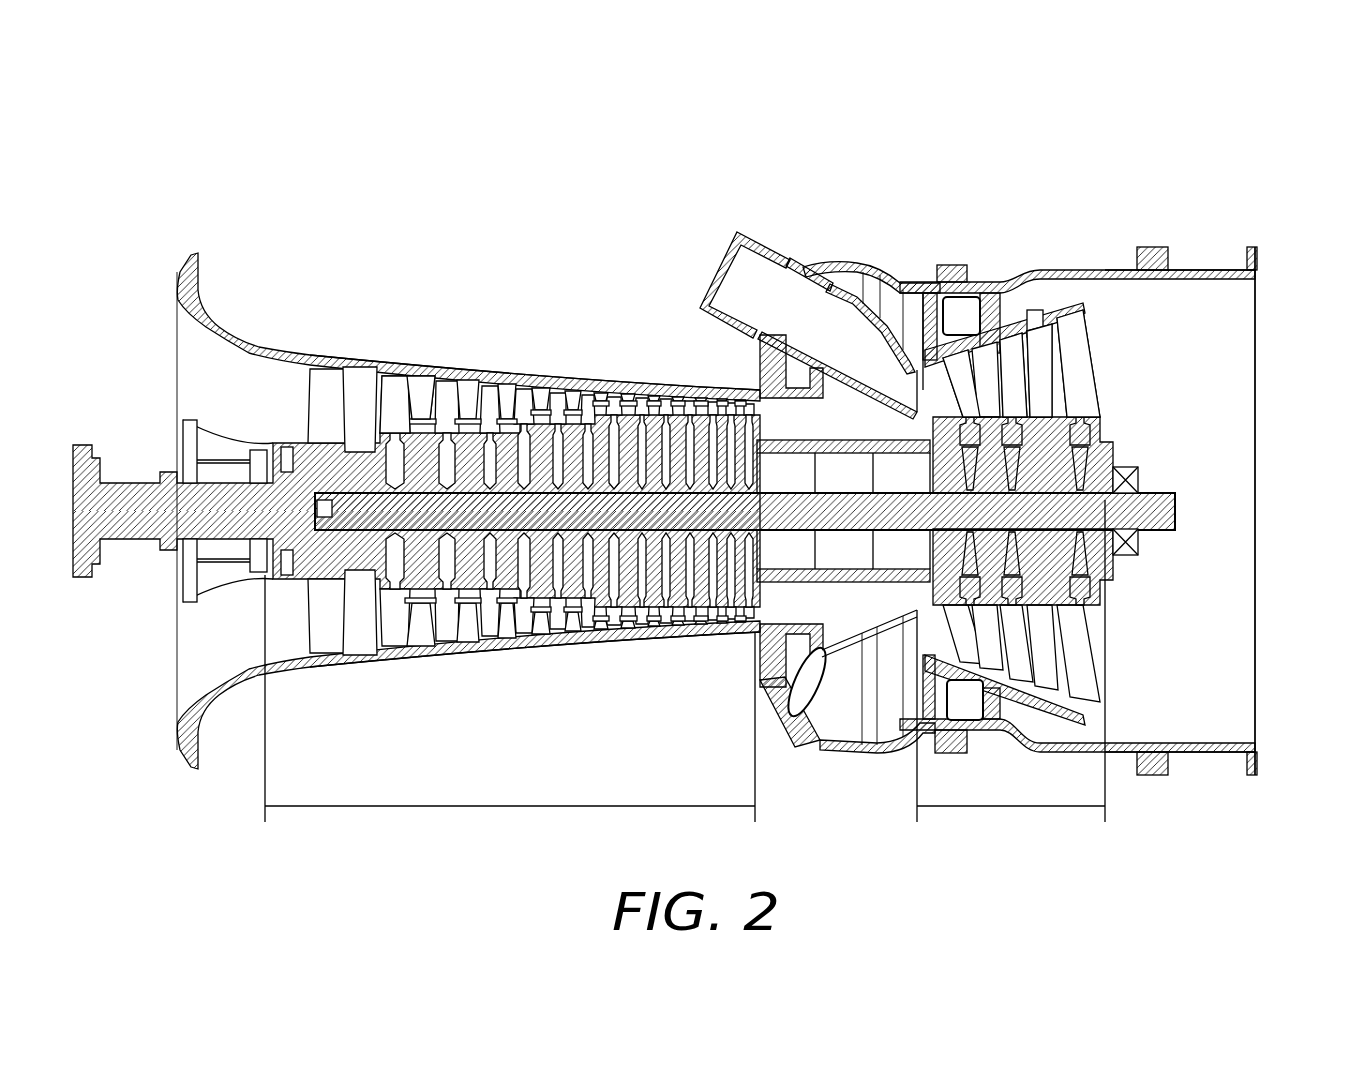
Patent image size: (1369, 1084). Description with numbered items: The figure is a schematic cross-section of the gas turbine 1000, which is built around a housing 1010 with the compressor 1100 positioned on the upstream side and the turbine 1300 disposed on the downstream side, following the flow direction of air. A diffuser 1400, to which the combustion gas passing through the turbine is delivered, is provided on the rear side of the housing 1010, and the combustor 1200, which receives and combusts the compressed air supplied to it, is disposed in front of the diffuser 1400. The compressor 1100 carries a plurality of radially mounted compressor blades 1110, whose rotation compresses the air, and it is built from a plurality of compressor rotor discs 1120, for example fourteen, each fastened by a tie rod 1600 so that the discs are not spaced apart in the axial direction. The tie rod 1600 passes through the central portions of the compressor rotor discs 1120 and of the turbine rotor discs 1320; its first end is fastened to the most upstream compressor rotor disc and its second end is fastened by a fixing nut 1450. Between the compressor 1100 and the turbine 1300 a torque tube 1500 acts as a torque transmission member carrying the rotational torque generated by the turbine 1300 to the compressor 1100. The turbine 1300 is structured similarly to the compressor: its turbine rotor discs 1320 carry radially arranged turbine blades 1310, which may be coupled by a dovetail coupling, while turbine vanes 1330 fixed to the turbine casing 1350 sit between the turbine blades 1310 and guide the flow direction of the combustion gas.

The gas turbine 1000 is at (355, 105).
The housing 1010 is at (527, 342).
The compressor 1100 is at (512, 588).
The compressor blades 1110 is at (413, 405).
The compressor rotor discs 1120 is at (372, 455).
The combustor 1200 is at (749, 222).
The turbine 1300 is at (1078, 534).
The turbine blades 1310 is at (1043, 372).
The turbine rotor discs 1320 is at (1093, 394).
The turbine vanes 1330 is at (1003, 370).
The turbine casing 1350 is at (1030, 380).
The diffuser 1400 is at (1203, 252).
The fixing nut 1450 is at (1118, 467).
The torque tube 1500 is at (791, 436).
The tie rod 1600 is at (272, 510).